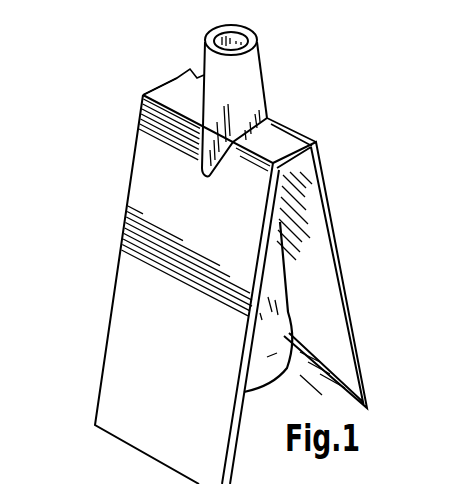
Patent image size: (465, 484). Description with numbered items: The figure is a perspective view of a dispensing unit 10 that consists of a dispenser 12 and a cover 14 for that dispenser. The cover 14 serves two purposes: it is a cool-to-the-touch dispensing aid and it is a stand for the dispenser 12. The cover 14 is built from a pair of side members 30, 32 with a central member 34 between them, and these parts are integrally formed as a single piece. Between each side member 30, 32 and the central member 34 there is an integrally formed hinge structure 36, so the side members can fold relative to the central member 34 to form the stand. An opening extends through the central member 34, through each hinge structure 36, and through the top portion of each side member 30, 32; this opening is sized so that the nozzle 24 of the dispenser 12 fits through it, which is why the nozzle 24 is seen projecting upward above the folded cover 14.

The dispensing unit 10 is at (385, 192).
The dispenser 12 is at (195, 45).
The cover 14 is at (100, 346).
The nozzle 24 is at (253, 33).
The side member 30 is at (182, 247).
The side member 32 is at (325, 283).
The central member 34 is at (178, 87).
The hinge structure 36 is at (152, 116).